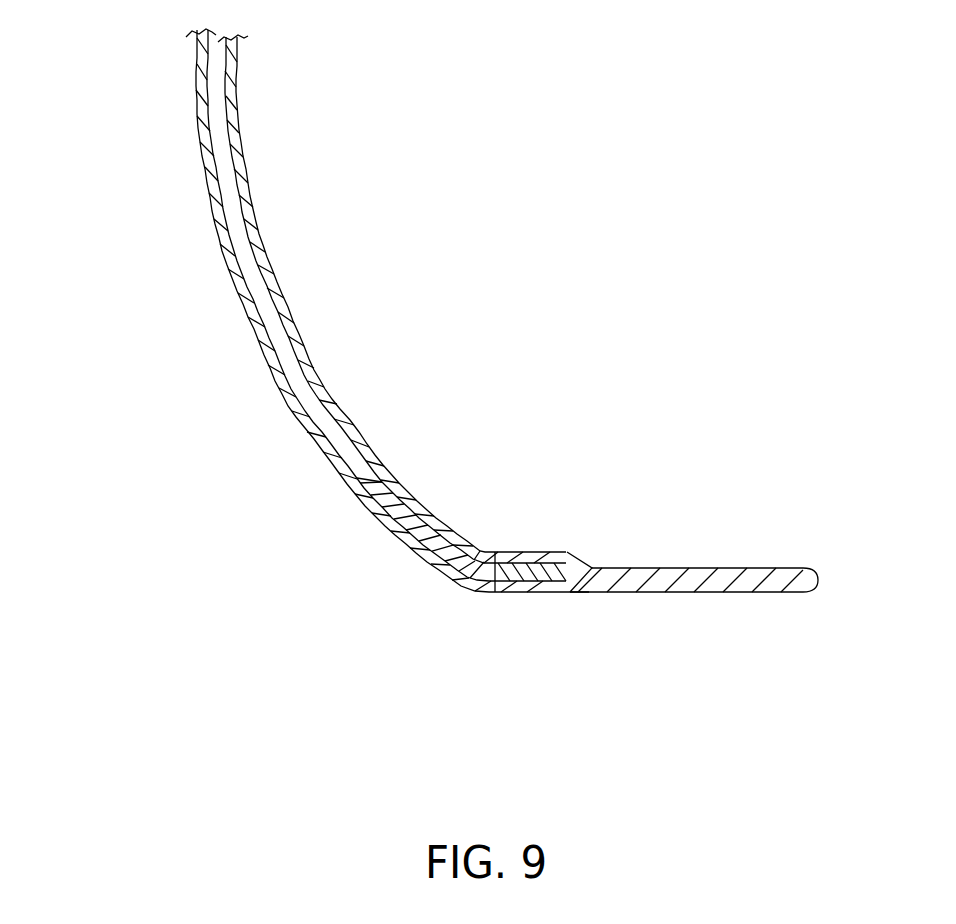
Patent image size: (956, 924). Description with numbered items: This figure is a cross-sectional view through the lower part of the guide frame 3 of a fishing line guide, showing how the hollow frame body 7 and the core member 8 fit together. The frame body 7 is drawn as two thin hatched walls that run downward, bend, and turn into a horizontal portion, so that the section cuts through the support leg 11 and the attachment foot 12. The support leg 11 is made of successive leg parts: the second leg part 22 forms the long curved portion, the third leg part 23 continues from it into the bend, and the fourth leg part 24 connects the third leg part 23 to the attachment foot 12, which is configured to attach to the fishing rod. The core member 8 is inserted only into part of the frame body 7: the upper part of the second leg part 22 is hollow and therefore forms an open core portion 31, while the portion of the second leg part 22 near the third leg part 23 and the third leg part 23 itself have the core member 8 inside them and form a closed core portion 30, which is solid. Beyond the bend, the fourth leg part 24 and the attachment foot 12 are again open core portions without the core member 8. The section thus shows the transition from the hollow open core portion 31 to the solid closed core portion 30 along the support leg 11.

The guide frame 3 is at (240, 83).
The frame body 7 is at (240, 133).
The core member 8 is at (452, 536).
The support leg 11 is at (203, 142).
The attachment foot 12 is at (728, 568).
The second leg part 22 is at (222, 258).
The third leg part 23 is at (526, 594).
The fourth leg part 24 is at (590, 557).
The closed core portion 30 is at (455, 582).
The open core portion 31 is at (293, 318).